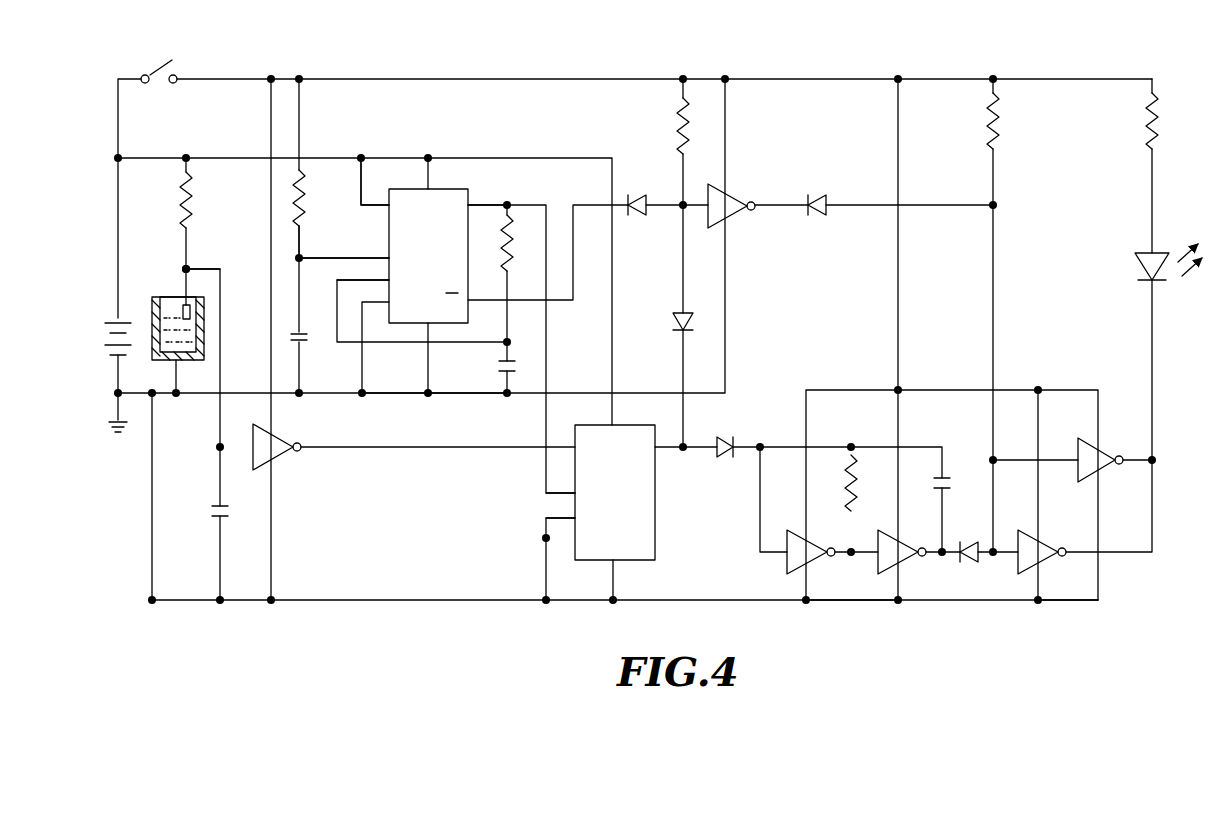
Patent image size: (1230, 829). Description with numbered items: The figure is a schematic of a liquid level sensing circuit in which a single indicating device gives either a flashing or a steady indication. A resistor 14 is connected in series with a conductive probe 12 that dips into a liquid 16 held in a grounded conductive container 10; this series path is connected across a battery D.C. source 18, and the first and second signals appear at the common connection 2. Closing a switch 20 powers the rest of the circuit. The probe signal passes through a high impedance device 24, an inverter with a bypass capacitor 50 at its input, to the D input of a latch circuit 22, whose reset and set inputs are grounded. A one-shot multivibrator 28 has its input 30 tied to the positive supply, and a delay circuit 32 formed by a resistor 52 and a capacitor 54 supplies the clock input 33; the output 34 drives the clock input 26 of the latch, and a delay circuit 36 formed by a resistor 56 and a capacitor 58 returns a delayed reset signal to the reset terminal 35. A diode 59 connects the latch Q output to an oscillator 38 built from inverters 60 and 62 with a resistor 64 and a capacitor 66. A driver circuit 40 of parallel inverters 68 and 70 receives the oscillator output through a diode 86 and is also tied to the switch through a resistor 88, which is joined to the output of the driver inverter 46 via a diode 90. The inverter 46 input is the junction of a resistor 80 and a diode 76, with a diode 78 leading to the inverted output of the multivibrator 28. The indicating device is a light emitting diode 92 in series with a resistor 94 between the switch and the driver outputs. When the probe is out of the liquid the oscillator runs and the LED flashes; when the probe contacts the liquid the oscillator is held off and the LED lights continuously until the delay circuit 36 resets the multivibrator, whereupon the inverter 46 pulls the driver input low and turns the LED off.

The common connection 2 is at (190, 267).
The container 10 is at (160, 356).
The conductive probe 12 is at (185, 288).
The resistor 14 is at (194, 214).
The liquid 16 is at (165, 320).
The D.C. source 18 is at (110, 322).
The switch 20 is at (158, 59).
The latch circuit 22 is at (655, 552).
The high impedance device 24 is at (282, 460).
The clock input 26 is at (574, 496).
The one-shot multivibrator 28 is at (468, 193).
The input 30 is at (382, 202).
The delay circuit 32 is at (311, 255).
The clock input 33 is at (386, 256).
The output 34 is at (470, 208).
The reset terminal 35 is at (386, 278).
The delay circuit 36 is at (462, 403).
The oscillator 38 is at (866, 603).
The driver circuit 40 is at (1076, 612).
The driver inverter 46 is at (728, 200).
The bypass capacitor 50 is at (210, 510).
The resistor 52 is at (306, 206).
The capacitor 54 is at (306, 343).
The resistor 56 is at (512, 242).
The capacitor 58 is at (500, 368).
The diode 59 is at (727, 460).
The inverter 60 is at (812, 558).
The inverter 62 is at (905, 560).
The resistor 64 is at (856, 478).
The capacitor 66 is at (946, 478).
The inverter 68 is at (1050, 534).
The inverter 70 is at (1108, 446).
The diode 76 is at (676, 320).
The diode 78 is at (638, 200).
The resistor 80 is at (678, 116).
The diode 86 is at (968, 560).
The resistor 88 is at (1000, 132).
The diode 90 is at (812, 212).
The diode 92 is at (1136, 267).
The resistor 94 is at (1160, 132).